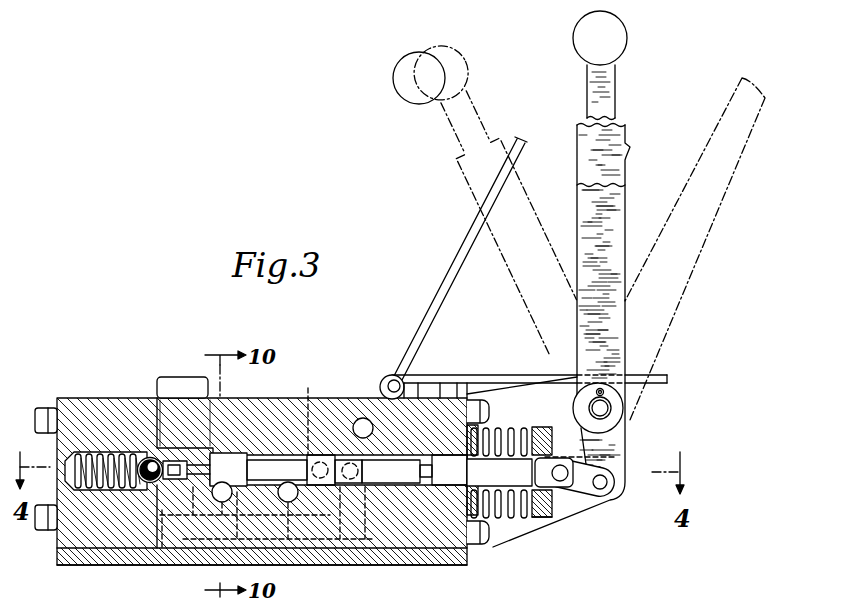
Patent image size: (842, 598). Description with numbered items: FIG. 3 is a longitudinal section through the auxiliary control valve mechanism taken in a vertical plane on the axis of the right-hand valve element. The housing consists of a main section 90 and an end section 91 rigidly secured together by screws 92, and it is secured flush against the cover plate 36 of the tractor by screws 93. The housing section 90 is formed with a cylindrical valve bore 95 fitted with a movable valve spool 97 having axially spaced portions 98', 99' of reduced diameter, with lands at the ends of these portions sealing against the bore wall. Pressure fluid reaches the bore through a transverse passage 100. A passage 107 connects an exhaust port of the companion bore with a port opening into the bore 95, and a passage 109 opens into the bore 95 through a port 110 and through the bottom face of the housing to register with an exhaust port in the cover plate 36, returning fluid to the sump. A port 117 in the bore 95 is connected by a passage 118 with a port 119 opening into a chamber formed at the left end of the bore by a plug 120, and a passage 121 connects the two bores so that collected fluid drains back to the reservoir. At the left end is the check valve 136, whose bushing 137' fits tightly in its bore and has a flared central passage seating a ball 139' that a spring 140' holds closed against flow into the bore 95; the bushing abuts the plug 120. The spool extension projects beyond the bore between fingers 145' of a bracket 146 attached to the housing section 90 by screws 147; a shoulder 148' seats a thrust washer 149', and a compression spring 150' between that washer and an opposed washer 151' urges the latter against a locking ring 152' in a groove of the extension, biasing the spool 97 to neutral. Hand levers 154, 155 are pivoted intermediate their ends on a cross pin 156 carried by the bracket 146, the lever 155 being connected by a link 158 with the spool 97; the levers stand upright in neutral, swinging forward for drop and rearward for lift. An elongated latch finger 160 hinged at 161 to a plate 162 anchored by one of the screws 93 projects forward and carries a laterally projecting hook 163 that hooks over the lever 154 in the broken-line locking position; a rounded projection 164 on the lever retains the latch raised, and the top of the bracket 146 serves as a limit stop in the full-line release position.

The cover plate 36 is at (467, 558).
The main housing section 90 is at (190, 410).
The end section 91 is at (105, 408).
The screws 92 is at (43, 418).
The screws 93 is at (181, 380).
The valve bore 95 is at (236, 462).
The valve spool 97 is at (388, 460).
The reduced-diameter portion 98' is at (302, 429).
The reduced-diameter portion 99' is at (436, 417).
The passage 100 is at (292, 503).
The passage 107 is at (357, 419).
The passage 109 is at (378, 566).
The port 110 is at (336, 458).
The port 117 is at (308, 409).
The passage 118 is at (258, 562).
The port 119 is at (182, 487).
The plug 120 is at (216, 455).
The passage 121 is at (222, 503).
The check valve 136 is at (146, 462).
The bushing 137' is at (163, 419).
The ball 139' is at (107, 522).
The spring 140' is at (102, 432).
The finger 145' is at (556, 546).
The bracket 146 is at (625, 456).
The screws 147 is at (492, 546).
The shoulder 148' is at (499, 472).
The thrust washer 149' is at (499, 436).
The compression spring 150' is at (499, 457).
The washer 151' is at (547, 456).
The locking ring 152' is at (565, 499).
The hand lever 154 is at (470, 60).
The hand lever 155 is at (393, 90).
The cross pin 156 is at (604, 410).
The link 158 is at (582, 492).
The latch finger 160 is at (512, 375).
The hinge 161 is at (392, 374).
The plate 162 is at (441, 397).
The hook 163 is at (667, 378).
The projection 164 is at (524, 156).